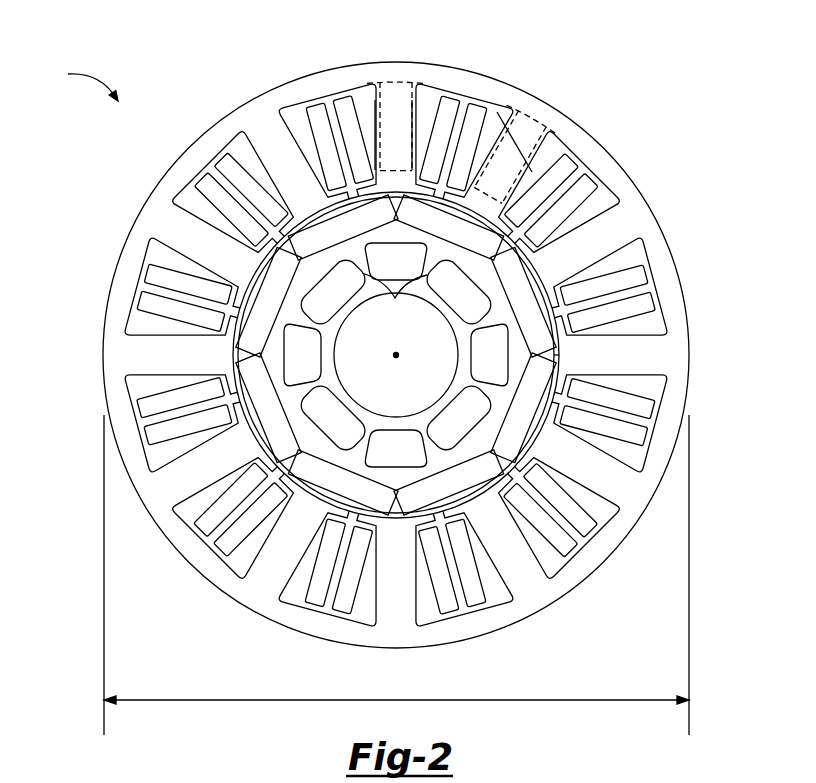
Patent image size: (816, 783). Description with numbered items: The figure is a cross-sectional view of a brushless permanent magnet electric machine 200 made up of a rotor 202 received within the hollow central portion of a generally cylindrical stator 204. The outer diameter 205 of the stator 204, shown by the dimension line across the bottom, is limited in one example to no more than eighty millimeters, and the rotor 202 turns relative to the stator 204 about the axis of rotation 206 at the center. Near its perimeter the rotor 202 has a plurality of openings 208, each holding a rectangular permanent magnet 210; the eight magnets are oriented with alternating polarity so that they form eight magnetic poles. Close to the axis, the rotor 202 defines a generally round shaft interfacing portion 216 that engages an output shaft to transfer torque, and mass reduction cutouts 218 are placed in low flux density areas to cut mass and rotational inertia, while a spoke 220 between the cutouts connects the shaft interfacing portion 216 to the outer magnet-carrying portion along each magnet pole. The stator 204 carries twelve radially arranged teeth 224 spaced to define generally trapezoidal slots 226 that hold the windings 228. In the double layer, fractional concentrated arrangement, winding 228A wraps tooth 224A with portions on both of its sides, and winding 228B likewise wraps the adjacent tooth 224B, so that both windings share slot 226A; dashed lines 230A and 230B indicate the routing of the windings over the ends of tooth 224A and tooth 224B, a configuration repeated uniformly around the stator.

The brushless permanent magnet electric machine 200 is at (78, 82).
The rotor 202 is at (505, 296).
The stator 204 is at (673, 260).
The outer diameter 205 is at (247, 698).
The axis of rotation 206 is at (393, 354).
The openings 208 is at (535, 352).
The permanent magnet 210 is at (517, 413).
The shaft interfacing portion 216 is at (437, 410).
The mass reduction cutouts 218 is at (413, 277).
The spoke 220 is at (394, 303).
The teeth 224 is at (263, 133).
The tooth 224A is at (376, 94).
The tooth 224B is at (522, 132).
The slot 226 is at (207, 172).
The slot 226A is at (457, 97).
The windings 228 is at (210, 190).
The winding 228A is at (437, 97).
The winding 228B is at (475, 106).
The dashed lines 230A is at (399, 82).
The dashed lines 230B is at (560, 128).